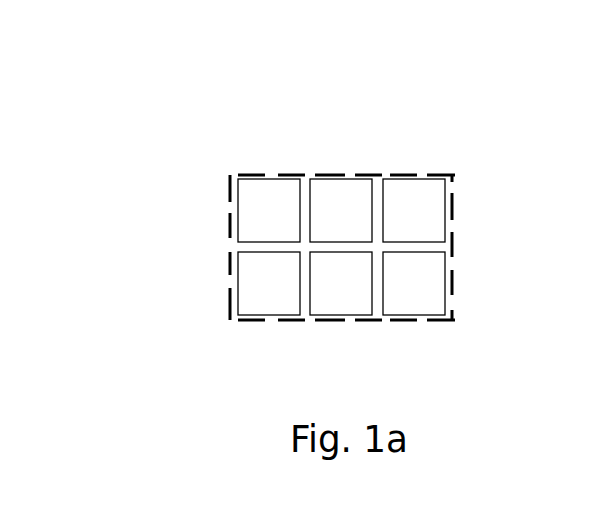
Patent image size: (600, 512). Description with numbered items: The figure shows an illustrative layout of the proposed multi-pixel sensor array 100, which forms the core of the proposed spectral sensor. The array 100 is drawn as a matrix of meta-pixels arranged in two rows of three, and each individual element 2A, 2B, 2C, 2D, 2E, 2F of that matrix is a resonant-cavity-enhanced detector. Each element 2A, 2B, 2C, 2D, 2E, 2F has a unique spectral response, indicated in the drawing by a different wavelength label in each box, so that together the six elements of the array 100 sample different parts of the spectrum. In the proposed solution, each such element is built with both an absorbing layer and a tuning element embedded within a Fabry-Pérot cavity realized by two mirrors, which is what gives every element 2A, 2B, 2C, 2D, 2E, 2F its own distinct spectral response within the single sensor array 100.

The multi-pixel sensor array 100 is at (167, 146).
The element 2A is at (281, 186).
The element 2B is at (355, 186).
The element 2C is at (427, 186).
The element 2D is at (256, 303).
The element 2E is at (326, 303).
The element 2F is at (397, 303).